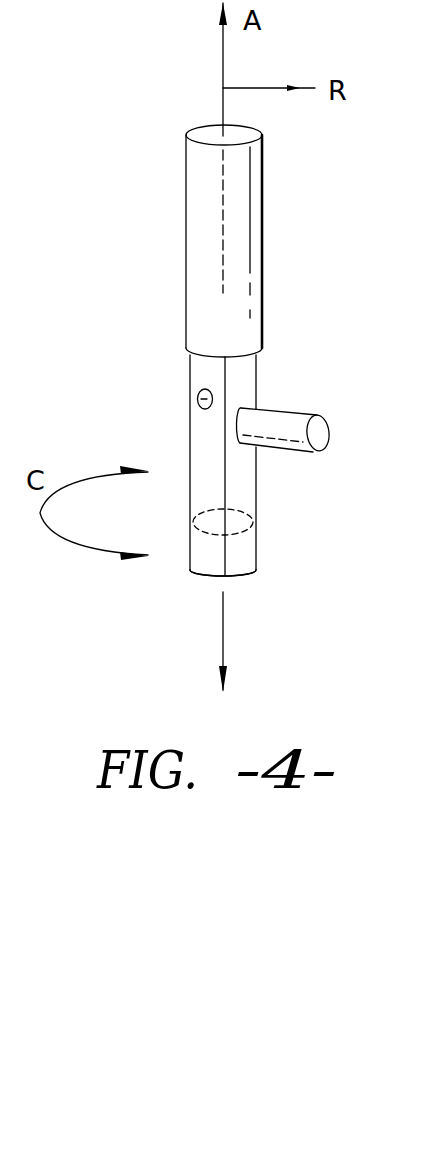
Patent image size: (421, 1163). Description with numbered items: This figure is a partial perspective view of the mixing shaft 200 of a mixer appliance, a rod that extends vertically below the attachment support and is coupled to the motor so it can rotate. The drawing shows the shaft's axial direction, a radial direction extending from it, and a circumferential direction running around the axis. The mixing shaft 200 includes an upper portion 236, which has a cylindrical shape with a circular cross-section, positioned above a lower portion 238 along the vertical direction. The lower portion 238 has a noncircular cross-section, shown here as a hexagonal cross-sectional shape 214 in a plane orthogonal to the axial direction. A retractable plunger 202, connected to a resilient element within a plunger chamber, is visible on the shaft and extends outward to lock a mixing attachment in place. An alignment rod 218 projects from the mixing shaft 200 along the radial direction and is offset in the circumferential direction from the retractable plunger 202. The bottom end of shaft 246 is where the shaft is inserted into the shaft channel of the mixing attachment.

The mixing shaft 200 is at (217, 319).
The upper portion 236 is at (276, 266).
The lower portion 238 is at (178, 433).
The retractable plunger 202 is at (196, 400).
The alignment rod 218 is at (288, 408).
The hexagonal cross-sectional shape 214 is at (254, 498).
The bottom end of shaft 246 is at (201, 577).